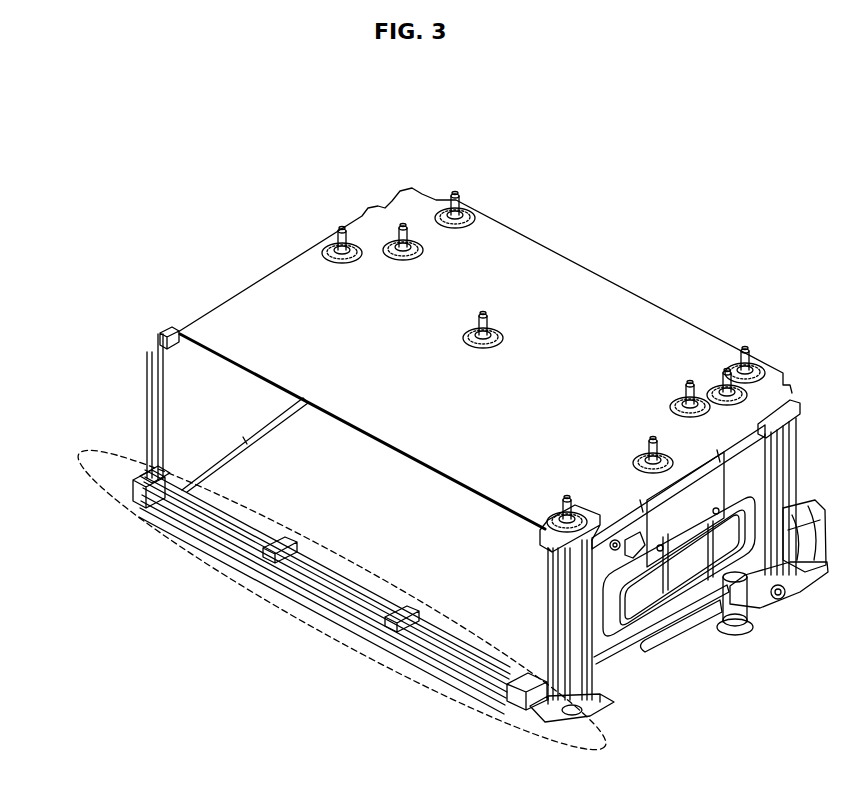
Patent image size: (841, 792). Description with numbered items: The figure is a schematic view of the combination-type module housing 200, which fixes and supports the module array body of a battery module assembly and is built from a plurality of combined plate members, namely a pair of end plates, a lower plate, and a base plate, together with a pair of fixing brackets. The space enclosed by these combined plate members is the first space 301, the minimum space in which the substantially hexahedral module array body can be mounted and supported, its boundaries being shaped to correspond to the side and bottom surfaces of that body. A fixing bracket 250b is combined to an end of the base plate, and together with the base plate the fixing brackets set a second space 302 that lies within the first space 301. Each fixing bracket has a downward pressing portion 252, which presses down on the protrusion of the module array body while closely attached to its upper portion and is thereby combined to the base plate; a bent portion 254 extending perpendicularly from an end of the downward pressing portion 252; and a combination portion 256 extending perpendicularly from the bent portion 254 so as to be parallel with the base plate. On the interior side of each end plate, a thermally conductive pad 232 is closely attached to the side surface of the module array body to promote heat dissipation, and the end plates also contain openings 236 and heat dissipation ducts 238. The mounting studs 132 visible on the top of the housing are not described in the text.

The module housing 200 is at (112, 180).
The thermally conductive pad 232 is at (175, 356).
The first space 301 is at (300, 458).
The fixing bracket 250b is at (145, 478).
The bent portion 254 is at (145, 506).
The downward pressing portion 252 is at (147, 515).
The second space 302 is at (270, 603).
The combination portion 256 is at (593, 723).
The opening 236 is at (633, 603).
The heat dissipation duct 238 is at (793, 393).
The mounting stud 132 is at (746, 356).